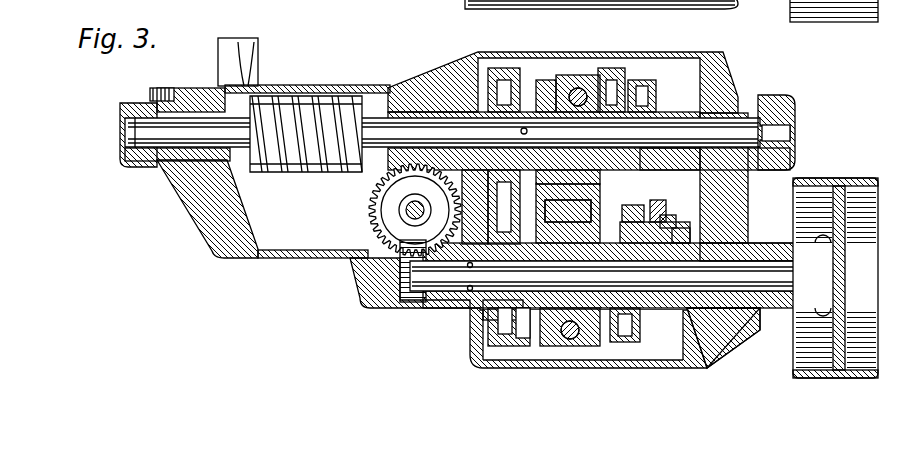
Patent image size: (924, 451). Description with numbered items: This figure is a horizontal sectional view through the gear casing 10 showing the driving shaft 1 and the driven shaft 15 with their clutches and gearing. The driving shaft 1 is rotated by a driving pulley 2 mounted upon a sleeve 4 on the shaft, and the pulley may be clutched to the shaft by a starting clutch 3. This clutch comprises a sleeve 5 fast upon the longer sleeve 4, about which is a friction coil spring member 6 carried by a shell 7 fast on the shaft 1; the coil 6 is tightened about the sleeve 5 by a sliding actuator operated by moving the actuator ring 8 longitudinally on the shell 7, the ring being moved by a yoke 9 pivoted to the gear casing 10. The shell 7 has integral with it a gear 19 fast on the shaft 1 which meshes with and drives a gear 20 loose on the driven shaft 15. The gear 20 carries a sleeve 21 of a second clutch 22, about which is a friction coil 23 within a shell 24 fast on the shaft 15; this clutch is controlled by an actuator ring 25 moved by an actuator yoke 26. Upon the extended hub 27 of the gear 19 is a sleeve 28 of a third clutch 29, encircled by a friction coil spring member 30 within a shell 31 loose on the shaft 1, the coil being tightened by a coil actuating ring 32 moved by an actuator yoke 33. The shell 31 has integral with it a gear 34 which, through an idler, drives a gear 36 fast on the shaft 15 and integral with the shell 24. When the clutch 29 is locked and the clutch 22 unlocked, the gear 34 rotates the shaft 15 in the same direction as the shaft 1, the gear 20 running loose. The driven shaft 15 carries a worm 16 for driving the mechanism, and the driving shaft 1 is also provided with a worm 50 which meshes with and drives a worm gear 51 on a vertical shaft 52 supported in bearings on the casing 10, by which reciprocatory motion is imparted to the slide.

The driving shaft 1 is at (447, 282).
The driving pulley 2 is at (870, 265).
The starting clutch 3 is at (692, 322).
The sleeve 4 is at (772, 257).
The sleeve 5 is at (662, 248).
The friction coil spring member 6 is at (682, 242).
The shell 7 is at (675, 227).
The actuator ring 8 is at (630, 222).
The yoke 9 is at (668, 210).
The gear casing 10 is at (455, 75).
The driven shaft 15 is at (412, 135).
The worm 16 is at (322, 98).
The gear 19 is at (613, 343).
The gear 20 is at (620, 103).
The sleeve 21 is at (572, 172).
The clutch 22 is at (535, 83).
The friction coil 23 is at (580, 83).
The shell 24 is at (603, 77).
The actuator ring 25 is at (550, 80).
The actuator yoke 26 is at (576, 86).
The extended hub 27 is at (587, 253).
The sleeve 28 is at (570, 250).
The clutch 29 is at (533, 338).
The friction coil spring member 30 is at (593, 323).
The shell 31 is at (546, 228).
The coil actuating ring 32 is at (537, 337).
The actuator yoke 33 is at (553, 340).
The gear 34 is at (492, 326).
The gear 36 is at (493, 76).
The worm 50 is at (412, 303).
The worm gear 51 is at (385, 197).
The vertical shaft 52 is at (405, 211).